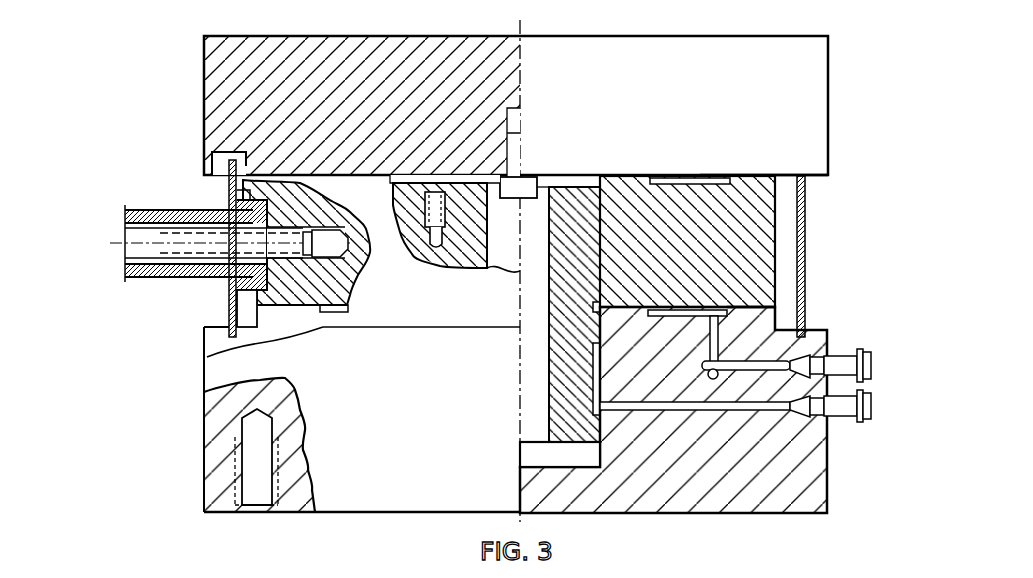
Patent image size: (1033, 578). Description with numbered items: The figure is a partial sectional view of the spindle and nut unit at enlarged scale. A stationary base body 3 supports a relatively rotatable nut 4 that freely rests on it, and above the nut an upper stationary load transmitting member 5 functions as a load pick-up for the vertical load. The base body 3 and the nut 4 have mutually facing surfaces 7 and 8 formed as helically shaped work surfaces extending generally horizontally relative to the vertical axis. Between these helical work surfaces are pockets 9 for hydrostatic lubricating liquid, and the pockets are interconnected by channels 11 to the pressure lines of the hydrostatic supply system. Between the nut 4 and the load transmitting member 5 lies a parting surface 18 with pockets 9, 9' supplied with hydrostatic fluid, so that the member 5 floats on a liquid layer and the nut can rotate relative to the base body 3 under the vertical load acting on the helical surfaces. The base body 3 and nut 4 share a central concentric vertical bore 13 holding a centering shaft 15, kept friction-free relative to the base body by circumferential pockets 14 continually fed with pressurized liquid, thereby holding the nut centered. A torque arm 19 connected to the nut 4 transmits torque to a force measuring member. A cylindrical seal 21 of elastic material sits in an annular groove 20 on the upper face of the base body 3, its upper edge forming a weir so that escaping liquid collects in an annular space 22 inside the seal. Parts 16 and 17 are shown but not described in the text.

The base body 3 is at (803, 498).
The nut 4 is at (752, 234).
The load transmitting member 5 is at (750, 83).
The work surface 7 is at (752, 312).
The work surface 8 is at (697, 304).
The pocket 9 is at (687, 338).
The pocket 9' is at (690, 153).
The channel 11 is at (764, 368).
The vertical bore 13 is at (600, 458).
The pockets 14 is at (520, 312).
The centering shaft 15 is at (600, 431).
The spacer bar 16 is at (745, 185).
The underside of upper plate 17 is at (762, 163).
The parting surface 18 is at (562, 175).
The torque arm 19 is at (168, 211).
The annular groove 20 is at (227, 338).
The cylindrical seal 21 is at (226, 300).
The annular space 22 is at (242, 317).